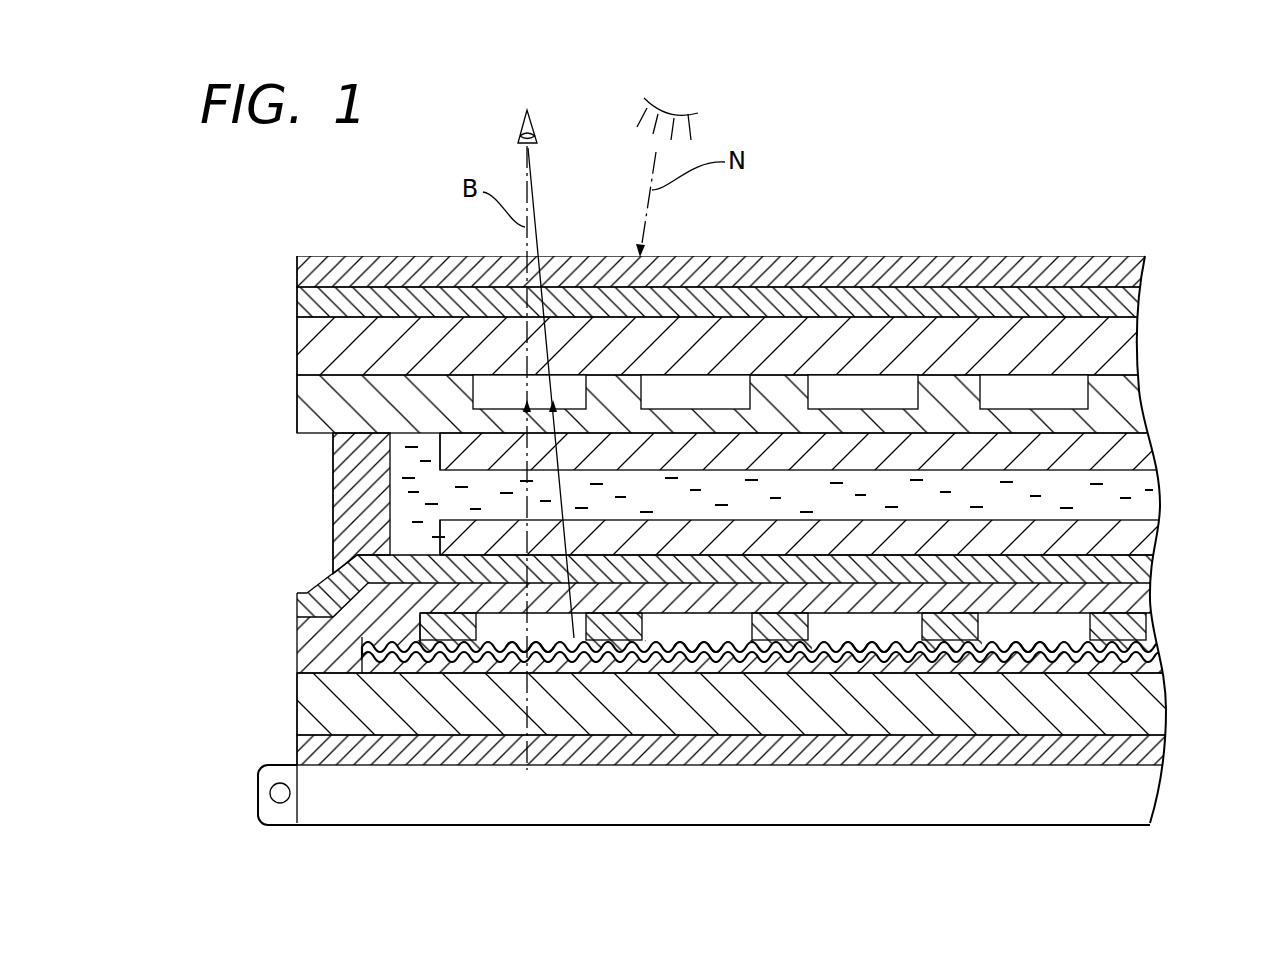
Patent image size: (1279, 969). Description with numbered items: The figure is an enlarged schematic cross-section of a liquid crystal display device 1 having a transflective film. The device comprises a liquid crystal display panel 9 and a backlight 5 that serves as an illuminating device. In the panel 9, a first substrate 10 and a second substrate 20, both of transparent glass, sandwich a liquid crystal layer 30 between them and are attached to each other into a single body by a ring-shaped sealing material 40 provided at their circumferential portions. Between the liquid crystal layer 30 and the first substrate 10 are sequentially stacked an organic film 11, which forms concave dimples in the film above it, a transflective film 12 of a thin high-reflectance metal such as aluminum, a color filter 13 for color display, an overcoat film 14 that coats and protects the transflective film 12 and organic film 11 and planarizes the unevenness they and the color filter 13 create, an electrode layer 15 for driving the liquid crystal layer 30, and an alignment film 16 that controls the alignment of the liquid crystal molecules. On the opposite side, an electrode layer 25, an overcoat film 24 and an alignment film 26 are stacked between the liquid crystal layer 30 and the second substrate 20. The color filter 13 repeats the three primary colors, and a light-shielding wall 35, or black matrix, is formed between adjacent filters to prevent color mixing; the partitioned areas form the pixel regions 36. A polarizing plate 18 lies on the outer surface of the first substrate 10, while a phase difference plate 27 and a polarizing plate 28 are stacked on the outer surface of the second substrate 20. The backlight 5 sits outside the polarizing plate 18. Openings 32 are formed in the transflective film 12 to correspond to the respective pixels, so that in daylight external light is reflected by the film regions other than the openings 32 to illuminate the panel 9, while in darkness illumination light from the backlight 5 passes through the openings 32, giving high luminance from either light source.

The liquid crystal display device 1 is at (1121, 845).
The backlight 5 is at (335, 810).
The liquid crystal display panel 9 is at (286, 368).
The first substrate 10 is at (1155, 705).
The organic film 11 is at (1150, 662).
The transflective film 12 is at (1152, 630).
The color filter 13 is at (488, 613).
The overcoat film 14 is at (1130, 593).
The electrode layer 15 is at (1128, 570).
The alignment film 16 is at (1130, 537).
The polarizing plate 18 is at (1140, 748).
The second substrate 20 is at (1123, 352).
The overcoat film 24 is at (1130, 407).
The electrode layer 25 is at (716, 385).
The alignment film 26 is at (1140, 452).
The phase difference plate 27 is at (1120, 302).
The polarizing plate 28 is at (1128, 272).
The liquid crystal layer 30 is at (1138, 488).
The openings 32 is at (537, 660).
The light-shielding wall 35 is at (445, 655).
The pixel regions 36 is at (507, 613).
The sealing material 40 is at (333, 478).